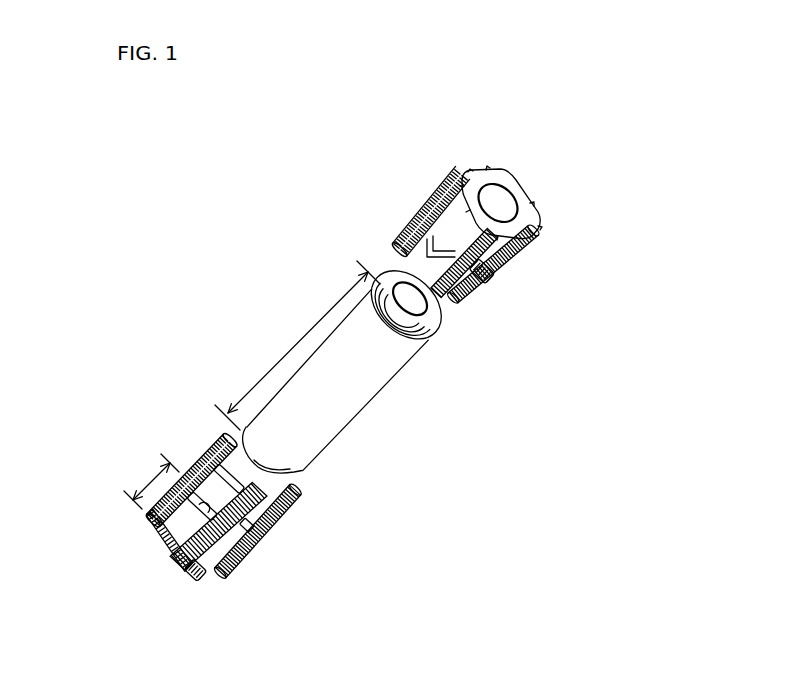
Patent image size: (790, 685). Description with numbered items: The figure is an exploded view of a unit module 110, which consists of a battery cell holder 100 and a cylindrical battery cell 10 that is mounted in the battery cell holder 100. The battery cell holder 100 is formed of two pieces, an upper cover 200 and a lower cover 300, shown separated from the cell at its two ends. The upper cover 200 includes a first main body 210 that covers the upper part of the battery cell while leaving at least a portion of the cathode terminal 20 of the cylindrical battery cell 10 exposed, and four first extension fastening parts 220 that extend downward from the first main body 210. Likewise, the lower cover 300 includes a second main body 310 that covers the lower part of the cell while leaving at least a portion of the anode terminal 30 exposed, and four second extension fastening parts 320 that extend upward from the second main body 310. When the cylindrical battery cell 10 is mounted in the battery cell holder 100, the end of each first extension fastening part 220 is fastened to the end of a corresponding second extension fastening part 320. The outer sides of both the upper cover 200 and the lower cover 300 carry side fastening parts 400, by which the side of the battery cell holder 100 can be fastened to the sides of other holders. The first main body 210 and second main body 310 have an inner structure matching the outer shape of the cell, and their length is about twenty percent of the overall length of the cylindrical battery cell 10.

The battery cell holder 100 is at (585, 217).
The unit module 110 is at (146, 213).
The cylindrical battery cell 10 is at (388, 392).
The cathode terminal 20 is at (400, 290).
The anode terminal 30 is at (294, 472).
The upper cover 200 is at (527, 257).
The first main body 210 is at (523, 210).
The first extension fastening parts 220 is at (420, 234).
The lower cover 300 is at (268, 563).
The second main body 310 is at (167, 543).
The second extension fastening parts 320 is at (207, 466).
The side fastening parts 400 is at (487, 272).